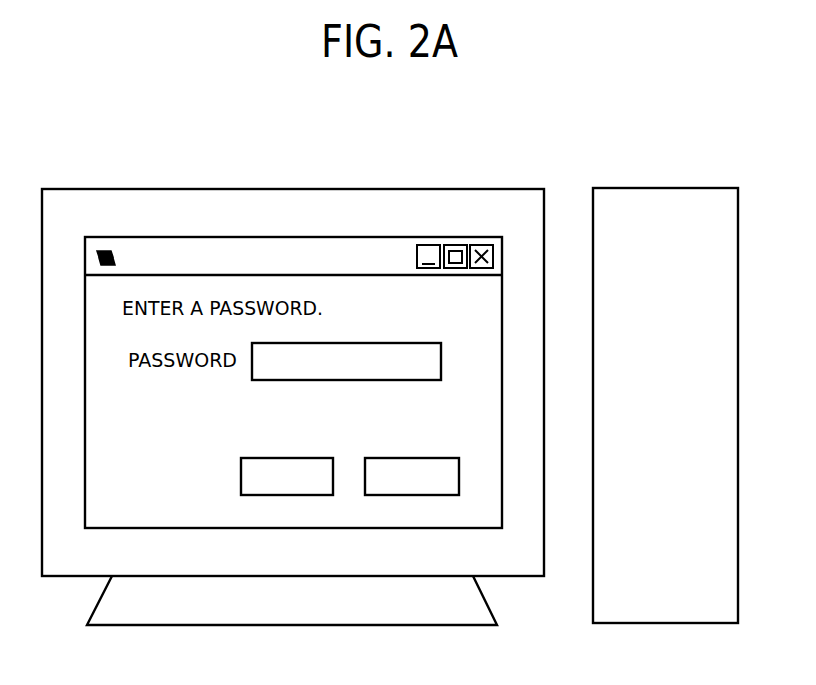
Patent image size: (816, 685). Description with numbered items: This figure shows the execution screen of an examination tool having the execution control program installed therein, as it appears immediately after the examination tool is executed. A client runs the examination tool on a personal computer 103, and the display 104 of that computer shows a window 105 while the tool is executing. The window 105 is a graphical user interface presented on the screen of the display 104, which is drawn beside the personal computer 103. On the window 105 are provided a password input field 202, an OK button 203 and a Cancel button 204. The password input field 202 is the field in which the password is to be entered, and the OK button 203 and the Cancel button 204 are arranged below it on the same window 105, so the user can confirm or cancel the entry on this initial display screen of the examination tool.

The personal computer 103 is at (643, 188).
The display 104 is at (128, 189).
The window 105 is at (331, 237).
The password input field 202 is at (252, 372).
The OK button 203 is at (310, 458).
The Cancel button 204 is at (436, 458).